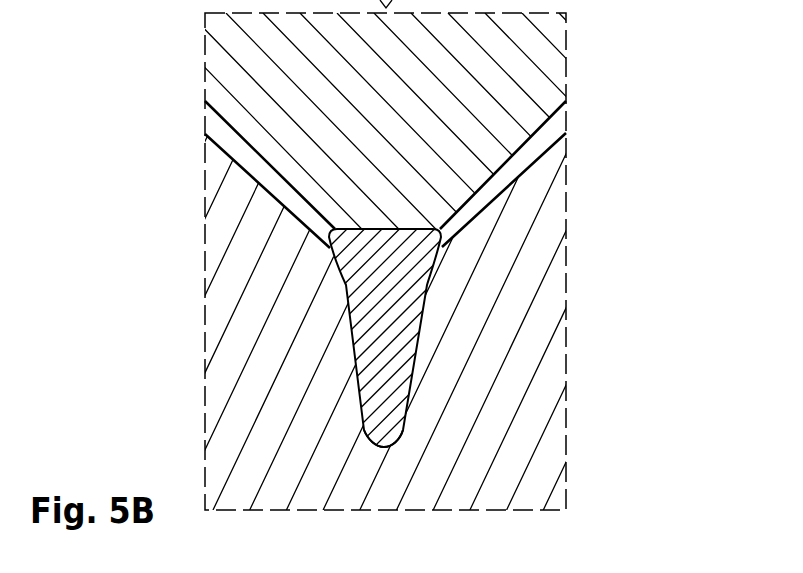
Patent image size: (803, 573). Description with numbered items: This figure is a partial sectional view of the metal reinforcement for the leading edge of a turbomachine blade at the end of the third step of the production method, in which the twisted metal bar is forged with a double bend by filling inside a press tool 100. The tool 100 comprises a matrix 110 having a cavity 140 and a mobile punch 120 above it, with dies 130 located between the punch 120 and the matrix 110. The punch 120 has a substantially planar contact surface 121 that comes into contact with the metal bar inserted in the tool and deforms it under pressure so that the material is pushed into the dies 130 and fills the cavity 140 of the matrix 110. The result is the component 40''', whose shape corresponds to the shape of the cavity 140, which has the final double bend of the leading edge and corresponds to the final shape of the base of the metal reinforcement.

The tool 100 is at (600, 292).
The matrix 110 is at (550, 368).
The mobile punch 120 is at (553, 70).
The contact surface 121 is at (389, 226).
The dies 130 is at (530, 147).
The cavity 140 is at (415, 375).
The component 40''' is at (382, 494).